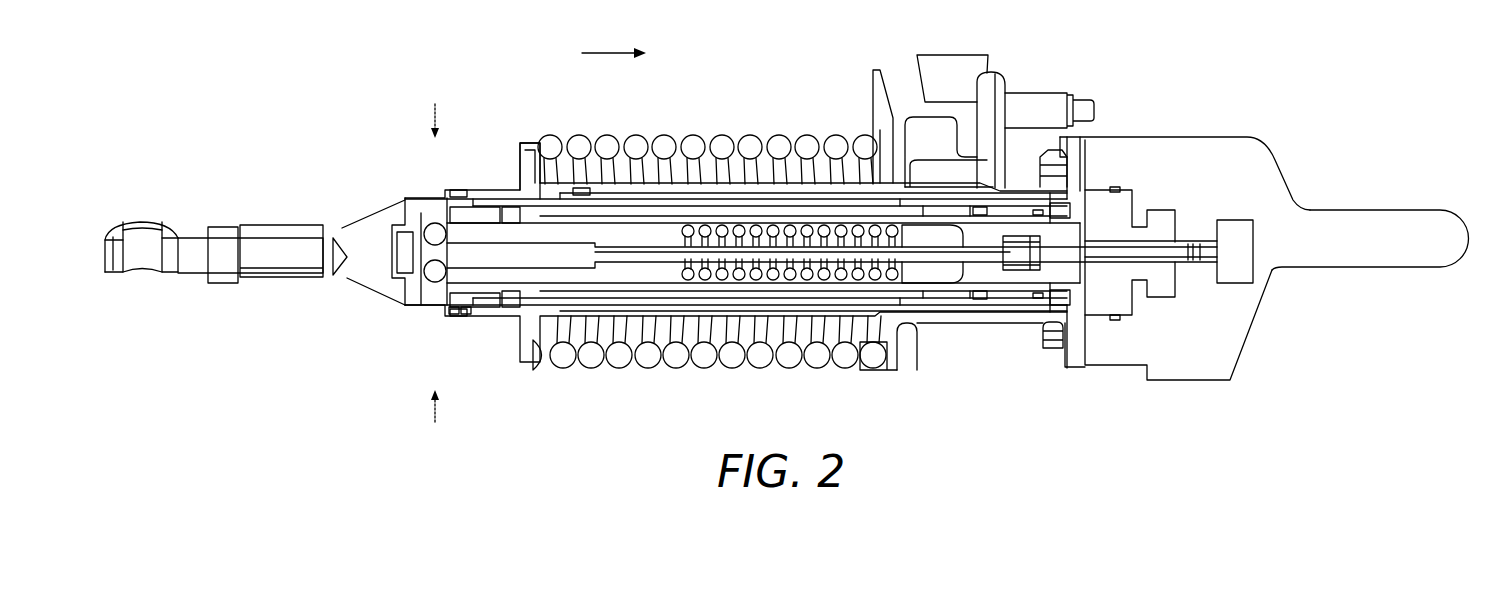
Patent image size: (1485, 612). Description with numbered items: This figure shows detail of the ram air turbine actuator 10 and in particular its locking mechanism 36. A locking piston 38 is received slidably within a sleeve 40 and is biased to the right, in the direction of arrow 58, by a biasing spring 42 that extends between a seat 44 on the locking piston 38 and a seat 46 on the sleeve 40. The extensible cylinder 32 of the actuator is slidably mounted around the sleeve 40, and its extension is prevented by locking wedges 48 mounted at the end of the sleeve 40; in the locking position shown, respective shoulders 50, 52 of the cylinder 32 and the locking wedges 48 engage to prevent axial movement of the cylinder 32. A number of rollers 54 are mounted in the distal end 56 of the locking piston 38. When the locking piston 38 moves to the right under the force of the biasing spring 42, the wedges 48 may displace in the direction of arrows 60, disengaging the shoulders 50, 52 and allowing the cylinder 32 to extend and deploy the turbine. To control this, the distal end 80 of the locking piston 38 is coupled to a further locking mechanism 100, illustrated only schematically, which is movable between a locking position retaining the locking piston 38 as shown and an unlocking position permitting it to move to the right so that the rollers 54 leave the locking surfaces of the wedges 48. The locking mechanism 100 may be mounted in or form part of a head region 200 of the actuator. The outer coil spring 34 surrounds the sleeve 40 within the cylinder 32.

The linear actuator assembly 10 is at (737, 78).
The extensible cylinder 32 is at (530, 180).
The outer coil spring 34 is at (611, 140).
The locking mechanism 36 is at (726, 306).
The locking piston 38 is at (1008, 258).
The sleeve 40 is at (663, 210).
The biasing spring 42 is at (823, 278).
The seat 44 is at (900, 278).
The seat 46 is at (676, 222).
The locking wedges 48 is at (434, 196).
The shoulder 50 is at (453, 313).
The shoulder 52 is at (460, 313).
The rollers 54 is at (412, 204).
The distal end 56 is at (377, 278).
The arrow 58 is at (614, 43).
The arrows 60 is at (435, 265).
The distal end 80 is at (1212, 244).
The locking mechanism 100 is at (1255, 229).
The head region 200 is at (1274, 275).